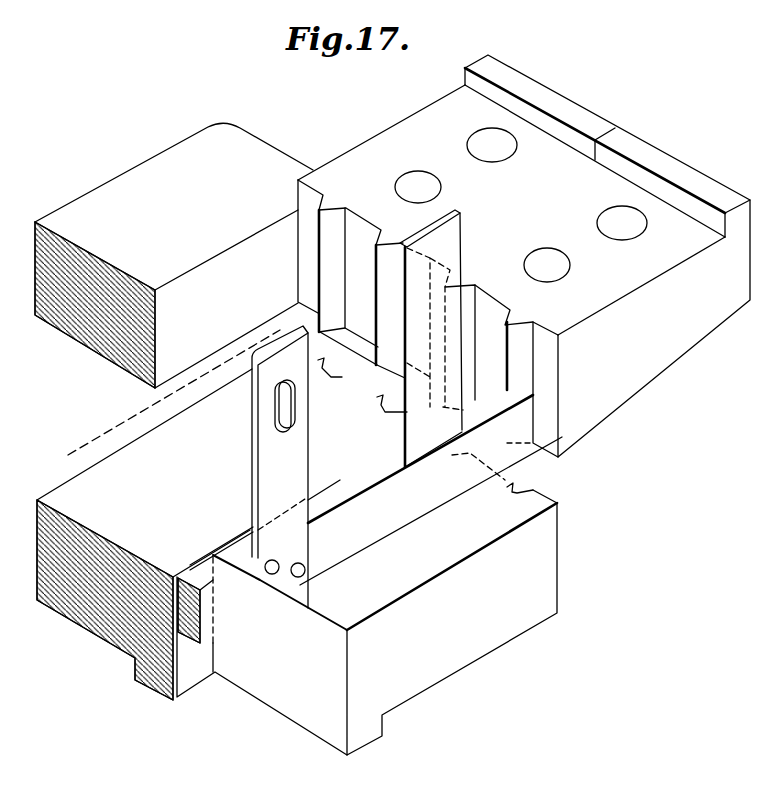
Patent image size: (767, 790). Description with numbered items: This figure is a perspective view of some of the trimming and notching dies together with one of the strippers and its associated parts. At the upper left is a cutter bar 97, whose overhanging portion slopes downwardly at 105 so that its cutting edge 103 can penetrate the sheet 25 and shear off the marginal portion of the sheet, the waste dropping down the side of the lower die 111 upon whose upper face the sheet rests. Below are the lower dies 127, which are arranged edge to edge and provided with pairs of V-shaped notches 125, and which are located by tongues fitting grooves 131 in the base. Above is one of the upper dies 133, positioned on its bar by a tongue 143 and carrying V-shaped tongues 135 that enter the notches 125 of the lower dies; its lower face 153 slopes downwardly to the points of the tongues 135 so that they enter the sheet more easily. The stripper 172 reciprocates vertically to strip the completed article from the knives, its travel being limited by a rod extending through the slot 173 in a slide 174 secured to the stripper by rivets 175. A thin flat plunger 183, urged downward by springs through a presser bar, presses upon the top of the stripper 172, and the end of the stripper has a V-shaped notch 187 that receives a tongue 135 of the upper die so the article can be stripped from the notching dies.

The cutter bar 97 is at (127, 181).
The die 133 is at (402, 130).
The tongue 143 is at (553, 102).
The V-shaped tongue 135 is at (320, 207).
The plunger 183 is at (453, 257).
The sloping portion 105 is at (147, 378).
The cutting edge 103 is at (150, 392).
The sheet 25 is at (96, 439).
The die 111 is at (163, 432).
The groove 131 is at (148, 682).
The die 127 is at (477, 645).
The stripper 172 is at (380, 525).
The V-shaped notch 187 is at (533, 396).
The lower face 153 is at (613, 415).
The slide 174 is at (303, 458).
The slot 173 is at (277, 417).
The rivet 175 is at (297, 563).
The notch 125 is at (337, 379).